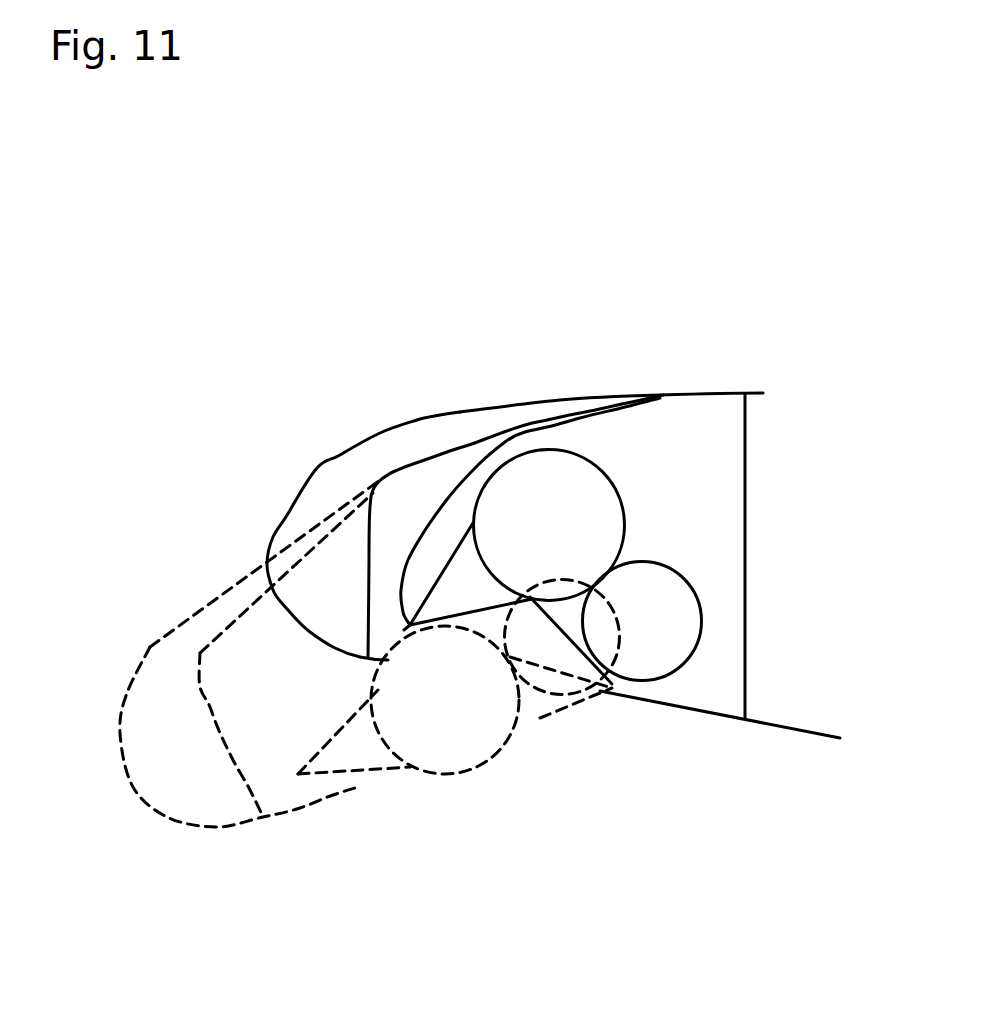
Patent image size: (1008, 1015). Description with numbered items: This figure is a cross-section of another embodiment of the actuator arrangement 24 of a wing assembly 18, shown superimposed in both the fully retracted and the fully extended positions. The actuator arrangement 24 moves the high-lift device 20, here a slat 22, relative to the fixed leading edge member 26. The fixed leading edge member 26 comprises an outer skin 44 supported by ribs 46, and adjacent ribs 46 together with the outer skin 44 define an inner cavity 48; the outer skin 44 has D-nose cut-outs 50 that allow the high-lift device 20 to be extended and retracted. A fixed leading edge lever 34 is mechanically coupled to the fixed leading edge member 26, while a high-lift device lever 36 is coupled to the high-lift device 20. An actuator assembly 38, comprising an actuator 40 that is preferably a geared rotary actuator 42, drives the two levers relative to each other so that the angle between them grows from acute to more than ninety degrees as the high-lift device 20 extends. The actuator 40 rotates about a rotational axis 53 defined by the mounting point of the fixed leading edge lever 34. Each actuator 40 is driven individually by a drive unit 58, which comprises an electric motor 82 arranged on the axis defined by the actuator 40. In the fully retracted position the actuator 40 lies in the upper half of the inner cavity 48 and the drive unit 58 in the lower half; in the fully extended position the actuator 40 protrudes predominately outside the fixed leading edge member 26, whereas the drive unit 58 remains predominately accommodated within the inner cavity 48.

The wing assembly 18 is at (255, 262).
The high-lift device 20 is at (363, 440).
The slat 22 is at (322, 475).
The actuator arrangement 24 is at (518, 303).
The fixed leading edge member 26 is at (714, 405).
The fixed leading edge lever 34 is at (613, 683).
The high-lift device lever 36 is at (445, 583).
The actuator assembly 38 is at (565, 369).
The actuator 40 is at (577, 479).
The geared rotary actuator 42 is at (600, 507).
The outer skin 44 is at (773, 730).
The ribs 46 is at (733, 517).
The inner cavity 48 is at (730, 600).
The D-nose cut-outs 50 is at (532, 772).
The rotational axis 53 is at (647, 692).
The drive unit 58 is at (678, 640).
The electric motor 82 is at (610, 637).